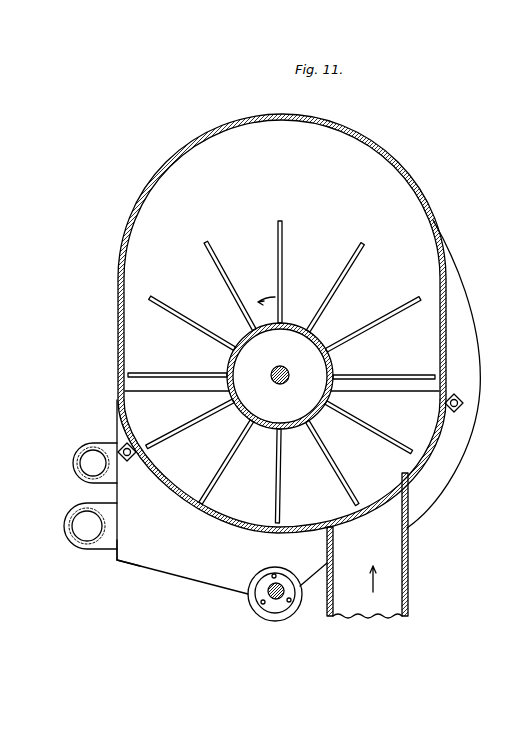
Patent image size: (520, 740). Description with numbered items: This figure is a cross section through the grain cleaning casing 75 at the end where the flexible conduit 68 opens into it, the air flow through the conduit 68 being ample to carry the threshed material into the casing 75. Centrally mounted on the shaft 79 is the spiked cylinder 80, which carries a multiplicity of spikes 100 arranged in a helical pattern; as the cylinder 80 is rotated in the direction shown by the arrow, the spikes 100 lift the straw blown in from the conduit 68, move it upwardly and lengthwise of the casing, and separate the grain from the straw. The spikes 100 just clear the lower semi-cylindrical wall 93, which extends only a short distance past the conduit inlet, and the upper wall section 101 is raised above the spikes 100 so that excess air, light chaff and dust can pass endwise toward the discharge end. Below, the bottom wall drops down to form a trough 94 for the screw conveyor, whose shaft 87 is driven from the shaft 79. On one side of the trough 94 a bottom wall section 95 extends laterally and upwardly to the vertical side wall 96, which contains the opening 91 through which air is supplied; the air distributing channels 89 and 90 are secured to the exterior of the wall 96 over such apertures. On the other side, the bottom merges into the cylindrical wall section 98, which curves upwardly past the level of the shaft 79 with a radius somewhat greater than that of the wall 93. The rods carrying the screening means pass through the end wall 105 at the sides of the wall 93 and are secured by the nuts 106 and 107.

The conduit 68 is at (410, 580).
The grain cleaning casing 75 is at (426, 183).
The shaft 79 is at (280, 366).
The spiked cylinder 80 is at (273, 425).
The shaft of screw conveyor 87 is at (278, 579).
The air distributing channel 89 is at (75, 452).
The air distributing channel 90 is at (66, 533).
The opening 91 is at (330, 576).
The lower semi-cylindrical wall 93 is at (228, 516).
The trough 94 is at (283, 621).
The bottom wall section 95 is at (195, 588).
The vertical side wall 96 is at (117, 493).
The cylindrical wall section 98 is at (478, 330).
The spikes 100 is at (388, 323).
The upper wall section 101 is at (310, 131).
The end wall 105 is at (140, 538).
The nut 106 is at (118, 446).
The nut 107 is at (465, 412).